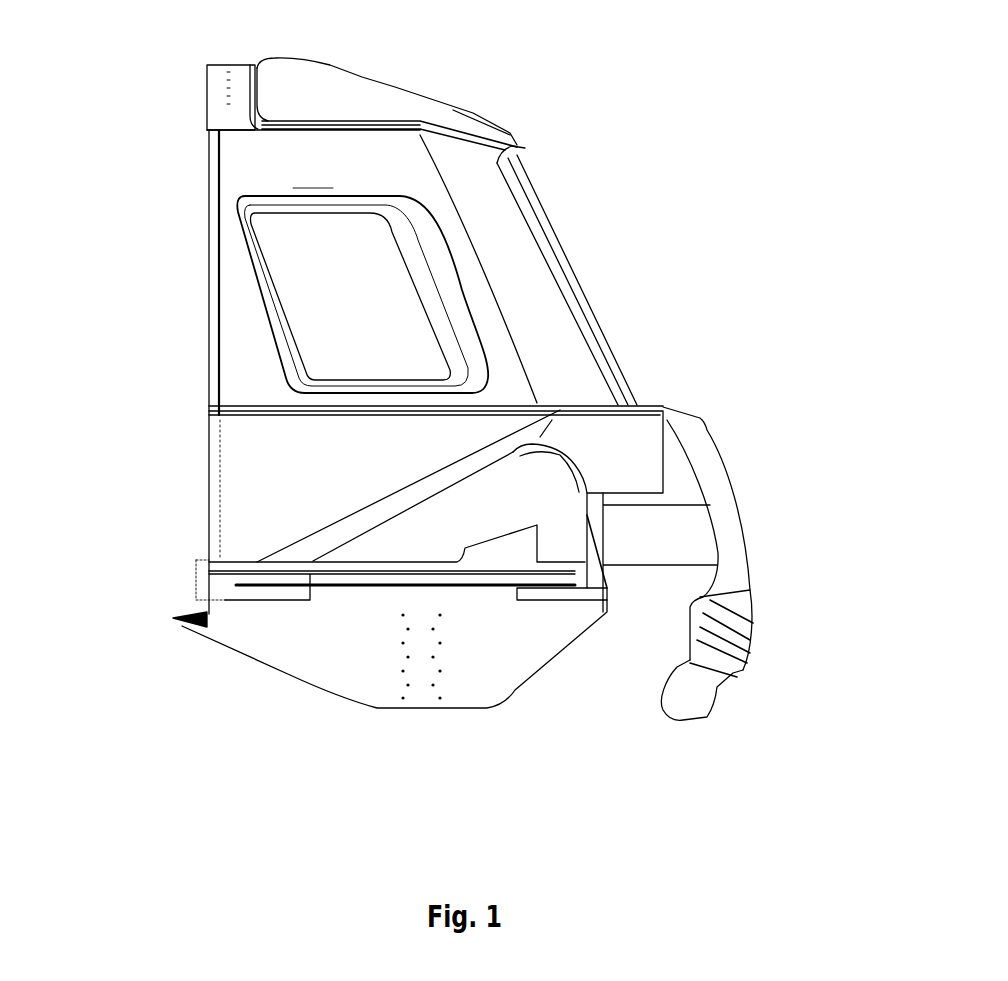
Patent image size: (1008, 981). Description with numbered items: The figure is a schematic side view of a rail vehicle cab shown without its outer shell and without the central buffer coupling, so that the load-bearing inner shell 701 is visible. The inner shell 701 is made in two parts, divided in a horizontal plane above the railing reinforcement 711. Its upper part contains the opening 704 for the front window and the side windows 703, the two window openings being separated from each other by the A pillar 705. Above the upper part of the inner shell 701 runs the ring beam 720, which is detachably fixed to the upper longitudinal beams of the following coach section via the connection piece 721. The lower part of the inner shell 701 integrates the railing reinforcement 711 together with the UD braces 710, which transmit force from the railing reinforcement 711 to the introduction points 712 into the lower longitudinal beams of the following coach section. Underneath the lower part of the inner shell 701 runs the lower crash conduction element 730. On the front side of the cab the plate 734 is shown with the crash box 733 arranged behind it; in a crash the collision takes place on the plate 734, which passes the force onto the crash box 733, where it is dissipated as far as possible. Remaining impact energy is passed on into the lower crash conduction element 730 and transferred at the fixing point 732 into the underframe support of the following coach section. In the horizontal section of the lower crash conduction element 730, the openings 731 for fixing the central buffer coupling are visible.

The inner shell 701 is at (206, 228).
The side windows 703 is at (297, 300).
The opening for the front window 704 is at (628, 360).
The A pillar 705 is at (482, 210).
The UD braces 710 is at (357, 525).
The railing reinforcement 711 is at (560, 437).
The introduction points 712 is at (205, 576).
The ring beam 720 is at (305, 93).
The connection piece 721 is at (205, 92).
The lower crash conduction element 730 is at (283, 643).
The openings for fixing the central buffer coupling 731 is at (433, 670).
The fixing point 732 is at (173, 618).
The crash box 733 is at (677, 533).
The plate 734 is at (703, 458).